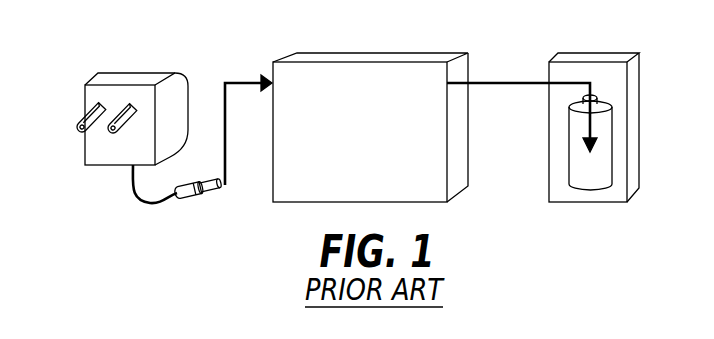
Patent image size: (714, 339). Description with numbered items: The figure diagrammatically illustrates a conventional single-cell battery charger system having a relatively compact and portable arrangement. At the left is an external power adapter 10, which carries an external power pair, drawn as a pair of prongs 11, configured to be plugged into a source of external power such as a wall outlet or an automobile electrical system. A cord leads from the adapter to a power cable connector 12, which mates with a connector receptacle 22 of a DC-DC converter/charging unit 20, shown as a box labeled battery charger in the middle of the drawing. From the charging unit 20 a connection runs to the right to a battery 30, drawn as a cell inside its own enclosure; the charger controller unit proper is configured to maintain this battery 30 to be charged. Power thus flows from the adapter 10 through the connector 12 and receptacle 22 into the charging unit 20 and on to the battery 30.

The external power adapter 10 is at (132, 77).
The plug prongs 11 is at (76, 126).
The power cable connector 12 is at (190, 196).
The DC-DC converter/charging unit 20 is at (368, 55).
The connector receptacle 22 is at (272, 64).
The battery 30 is at (593, 55).